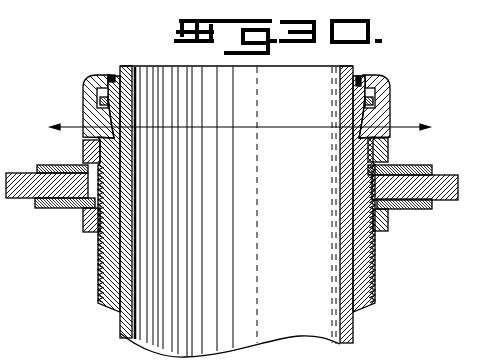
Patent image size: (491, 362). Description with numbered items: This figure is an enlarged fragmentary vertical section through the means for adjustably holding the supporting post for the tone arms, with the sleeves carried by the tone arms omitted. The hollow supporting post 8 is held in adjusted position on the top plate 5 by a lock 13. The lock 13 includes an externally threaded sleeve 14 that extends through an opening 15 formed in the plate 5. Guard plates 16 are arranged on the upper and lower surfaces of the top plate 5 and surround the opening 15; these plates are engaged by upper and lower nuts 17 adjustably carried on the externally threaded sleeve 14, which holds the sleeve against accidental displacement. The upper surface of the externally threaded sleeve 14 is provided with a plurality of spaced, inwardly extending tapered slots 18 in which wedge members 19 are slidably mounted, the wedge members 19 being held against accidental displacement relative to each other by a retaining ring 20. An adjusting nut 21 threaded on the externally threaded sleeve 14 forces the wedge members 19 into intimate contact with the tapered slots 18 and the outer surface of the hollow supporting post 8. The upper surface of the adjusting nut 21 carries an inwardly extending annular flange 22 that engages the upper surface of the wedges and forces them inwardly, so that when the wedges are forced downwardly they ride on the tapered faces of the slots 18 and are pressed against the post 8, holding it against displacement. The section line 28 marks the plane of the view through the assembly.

The top plate 5 is at (30, 197).
The hollow supporting post 8 is at (333, 323).
The lock 13 is at (373, 118).
The externally threaded sleeve 14 is at (372, 266).
The opening 15 is at (398, 211).
The guard plates 16 is at (53, 206).
The upper and lower nuts 17 is at (88, 231).
The tapered slots 18 is at (98, 110).
The wedge members 19 is at (110, 75).
The retaining ring 20 is at (85, 78).
The adjusting nut 21 is at (388, 88).
The annular flange 22 is at (365, 75).
The section line 28 is at (239, 130).